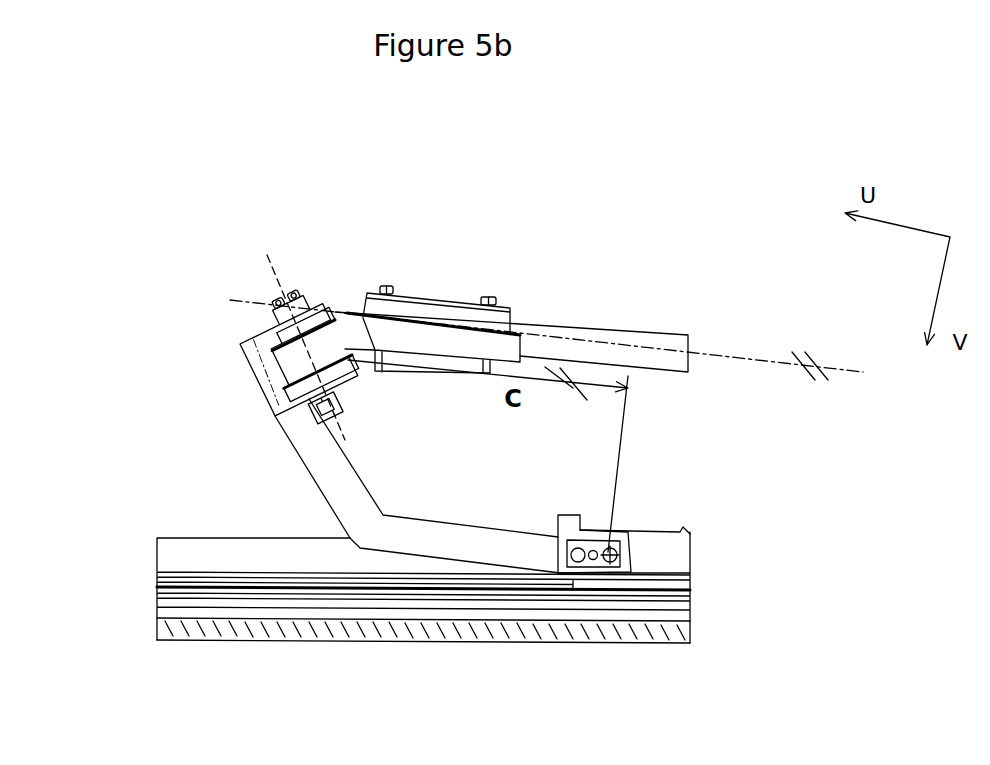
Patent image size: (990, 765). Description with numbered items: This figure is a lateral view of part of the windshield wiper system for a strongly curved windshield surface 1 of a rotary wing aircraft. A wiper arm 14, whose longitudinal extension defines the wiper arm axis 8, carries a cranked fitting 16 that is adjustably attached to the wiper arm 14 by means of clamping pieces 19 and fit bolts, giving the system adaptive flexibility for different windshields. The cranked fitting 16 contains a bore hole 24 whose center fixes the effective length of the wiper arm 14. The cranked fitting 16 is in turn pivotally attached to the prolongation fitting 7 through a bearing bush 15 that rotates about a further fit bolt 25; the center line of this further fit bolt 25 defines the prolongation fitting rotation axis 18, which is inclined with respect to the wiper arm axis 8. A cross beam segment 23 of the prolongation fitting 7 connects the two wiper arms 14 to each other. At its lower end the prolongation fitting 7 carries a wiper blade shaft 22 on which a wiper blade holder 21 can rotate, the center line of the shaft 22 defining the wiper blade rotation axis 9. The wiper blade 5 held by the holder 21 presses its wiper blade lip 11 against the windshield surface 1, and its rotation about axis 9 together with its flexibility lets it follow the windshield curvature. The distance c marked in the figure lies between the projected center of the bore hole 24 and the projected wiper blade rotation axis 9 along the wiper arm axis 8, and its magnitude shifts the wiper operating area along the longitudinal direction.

The windshield surface 1 is at (275, 603).
The wiper blade 5 is at (193, 557).
The prolongation fitting 7 is at (353, 488).
The wiper arm axis 8 is at (716, 352).
The wiper blade rotation axis 9 is at (660, 517).
The wiper blade shaft 22 is at (612, 553).
The wiper blade lip 11 is at (167, 610).
The wiper arm 14 is at (617, 327).
The bearing bush 15 is at (297, 383).
The cranked fitting 16 is at (437, 348).
The prolongation fitting rotation axis 18 is at (276, 276).
The clamping piece 19 is at (432, 307).
The wiper blade holder 21 is at (670, 565).
The cross beam segment 23 is at (270, 371).
The bore hole 24 is at (334, 310).
The further fit bolt 25 is at (343, 413).